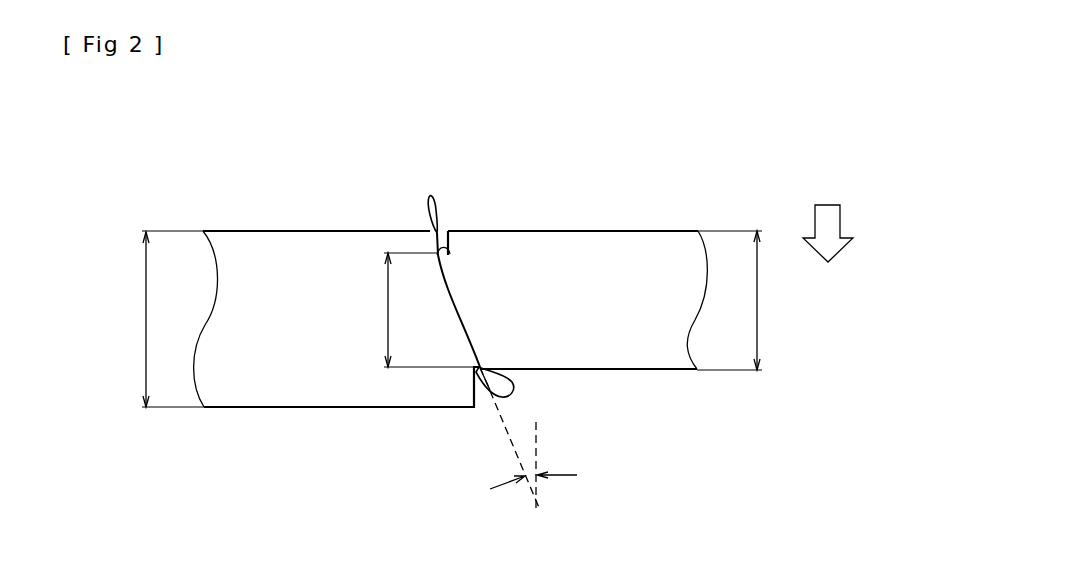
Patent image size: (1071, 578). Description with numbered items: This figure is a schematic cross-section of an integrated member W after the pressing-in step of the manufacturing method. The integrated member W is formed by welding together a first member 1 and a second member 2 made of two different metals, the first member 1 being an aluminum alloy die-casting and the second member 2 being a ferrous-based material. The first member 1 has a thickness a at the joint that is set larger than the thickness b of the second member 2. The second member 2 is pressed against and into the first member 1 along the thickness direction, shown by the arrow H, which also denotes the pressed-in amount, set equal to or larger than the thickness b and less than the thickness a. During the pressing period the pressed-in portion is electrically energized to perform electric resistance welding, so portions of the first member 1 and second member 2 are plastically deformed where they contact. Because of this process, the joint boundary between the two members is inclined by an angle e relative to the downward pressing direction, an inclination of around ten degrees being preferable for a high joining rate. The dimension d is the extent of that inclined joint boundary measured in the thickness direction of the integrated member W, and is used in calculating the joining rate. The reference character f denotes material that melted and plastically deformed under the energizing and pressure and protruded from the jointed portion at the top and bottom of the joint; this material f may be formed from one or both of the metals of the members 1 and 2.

The first member 1 is at (272, 245).
The second member 2 is at (613, 235).
The protruding material portion f is at (430, 193).
The thickness of the first member a is at (163, 319).
The thickness of the second member b is at (741, 300).
The joint boundary dimension d is at (419, 310).
The inclination angle e is at (528, 440).
The integrated member W is at (427, 428).
The pressing direction / pressed-in amount H is at (838, 231).